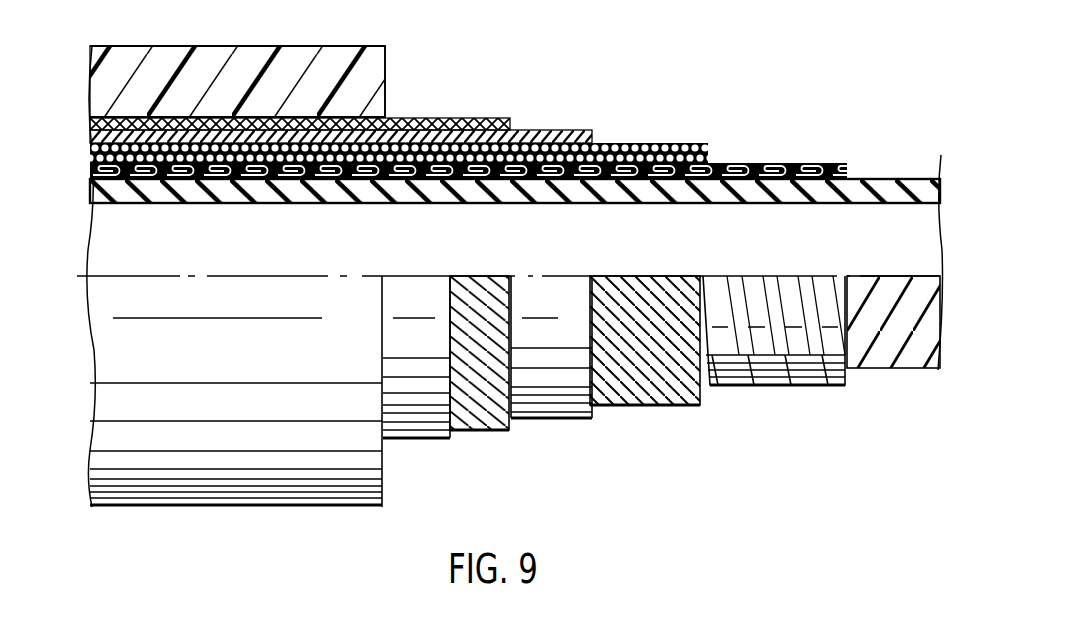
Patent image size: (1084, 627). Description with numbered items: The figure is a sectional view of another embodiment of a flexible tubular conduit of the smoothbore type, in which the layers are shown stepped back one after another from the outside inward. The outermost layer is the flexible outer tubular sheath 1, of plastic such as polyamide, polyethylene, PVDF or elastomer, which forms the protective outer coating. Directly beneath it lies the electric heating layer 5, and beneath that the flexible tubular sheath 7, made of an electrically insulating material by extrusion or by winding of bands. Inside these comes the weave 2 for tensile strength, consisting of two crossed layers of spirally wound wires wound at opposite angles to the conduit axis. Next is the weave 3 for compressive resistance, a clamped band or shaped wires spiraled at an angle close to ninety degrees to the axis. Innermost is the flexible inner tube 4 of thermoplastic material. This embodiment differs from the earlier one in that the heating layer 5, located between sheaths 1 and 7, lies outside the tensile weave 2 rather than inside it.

The flexible outer tubular sheath 1 is at (363, 80).
The weave for tensile strength 2 is at (670, 143).
The weave for compressive resistance 3 is at (808, 161).
The flexible inner tube 4 is at (890, 190).
The heating layer 5 is at (492, 118).
The flexible tubular sheath 7 is at (570, 131).